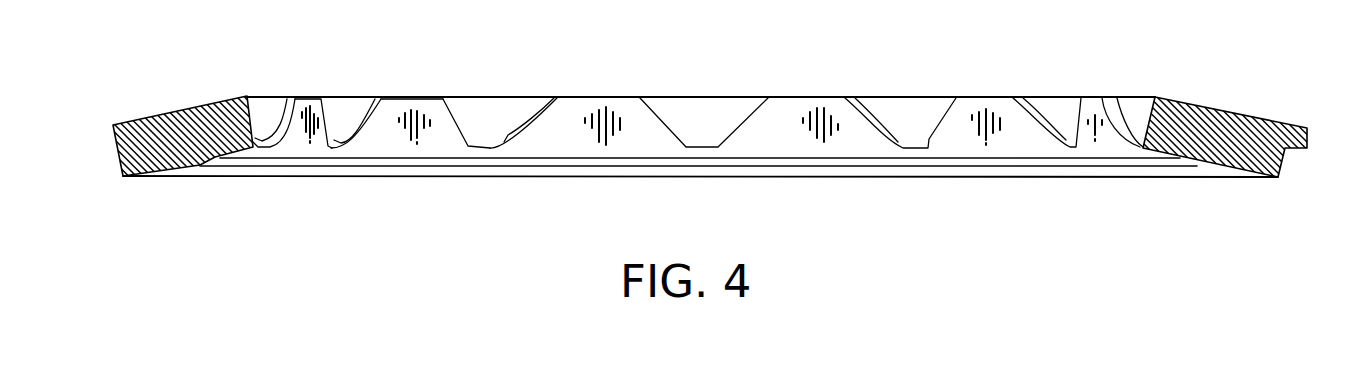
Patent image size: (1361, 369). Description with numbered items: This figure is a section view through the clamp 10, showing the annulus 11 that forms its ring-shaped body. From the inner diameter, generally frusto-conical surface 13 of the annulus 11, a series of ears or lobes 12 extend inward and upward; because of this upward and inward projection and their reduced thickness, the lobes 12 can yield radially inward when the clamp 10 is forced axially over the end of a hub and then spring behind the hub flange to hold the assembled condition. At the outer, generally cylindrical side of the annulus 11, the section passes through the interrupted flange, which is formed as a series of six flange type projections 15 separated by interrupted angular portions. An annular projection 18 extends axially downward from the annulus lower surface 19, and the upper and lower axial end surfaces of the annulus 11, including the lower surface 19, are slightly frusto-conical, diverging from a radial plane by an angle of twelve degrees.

The clamp 10 is at (740, 90).
The annulus 11 is at (150, 115).
The lobes 12 is at (457, 100).
The frusto-conical surface 13 is at (523, 107).
The flange type projections 15 is at (1302, 128).
The annular projection 18 is at (228, 170).
The annulus lower surface 19 is at (180, 173).